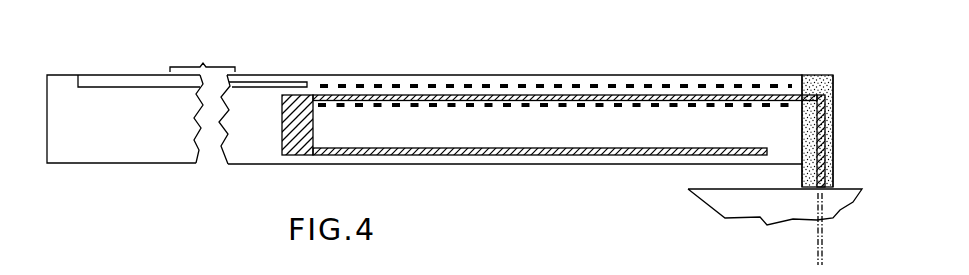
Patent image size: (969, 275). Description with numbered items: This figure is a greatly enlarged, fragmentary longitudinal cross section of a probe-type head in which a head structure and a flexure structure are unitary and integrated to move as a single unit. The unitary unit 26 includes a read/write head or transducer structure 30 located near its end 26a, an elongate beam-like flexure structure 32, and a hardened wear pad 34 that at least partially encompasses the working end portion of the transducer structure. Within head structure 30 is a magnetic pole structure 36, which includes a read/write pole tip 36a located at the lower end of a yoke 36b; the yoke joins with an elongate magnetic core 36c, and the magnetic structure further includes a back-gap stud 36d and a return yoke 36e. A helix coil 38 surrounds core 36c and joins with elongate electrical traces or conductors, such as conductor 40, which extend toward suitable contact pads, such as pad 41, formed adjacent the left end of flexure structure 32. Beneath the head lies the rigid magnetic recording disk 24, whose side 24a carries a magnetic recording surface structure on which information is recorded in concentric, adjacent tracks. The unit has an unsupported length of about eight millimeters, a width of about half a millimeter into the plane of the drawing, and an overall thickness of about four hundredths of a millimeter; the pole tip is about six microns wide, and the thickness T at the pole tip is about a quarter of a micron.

The rigid magnetic recording disk 24 is at (743, 203).
The side of disk 24a is at (717, 189).
The unitary unit 26 is at (545, 55).
The end of unit 26a is at (797, 76).
The read/write head structure 30 is at (790, 70).
The flexure structure 32 is at (455, 74).
The hardened wear pad 34 is at (838, 113).
The magnetic pole structure 36 is at (830, 130).
The read/write pole tip 36a is at (827, 183).
The yoke 36b is at (803, 137).
The elongate magnetic core 36c is at (700, 105).
The back-gap stud 36d is at (310, 115).
The return yoke 36e is at (472, 148).
The helix coil 38 is at (612, 85).
The conductor 40 is at (258, 87).
The contact pad 41 is at (113, 82).
The thickness at the pole tip T is at (850, 258).